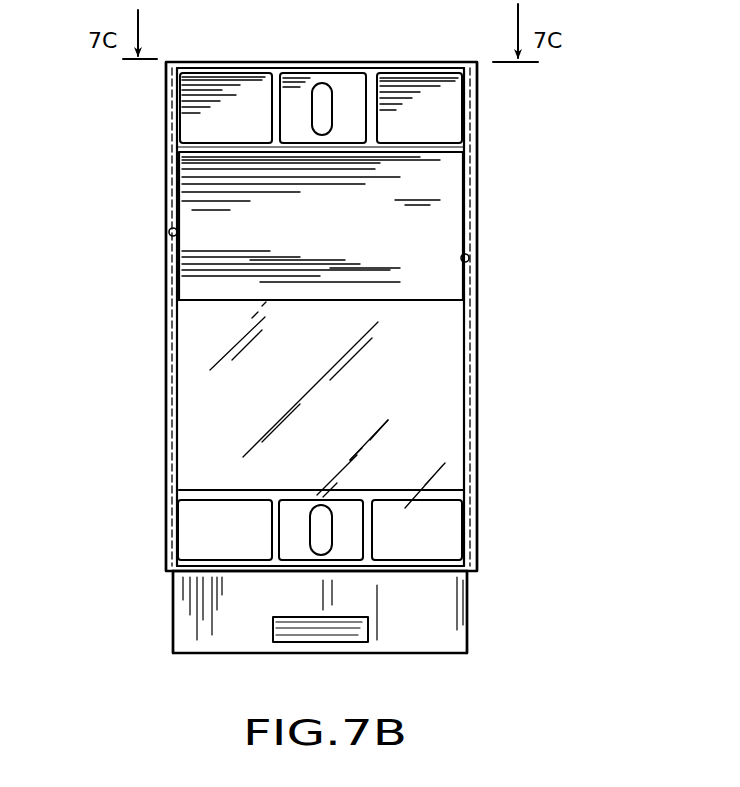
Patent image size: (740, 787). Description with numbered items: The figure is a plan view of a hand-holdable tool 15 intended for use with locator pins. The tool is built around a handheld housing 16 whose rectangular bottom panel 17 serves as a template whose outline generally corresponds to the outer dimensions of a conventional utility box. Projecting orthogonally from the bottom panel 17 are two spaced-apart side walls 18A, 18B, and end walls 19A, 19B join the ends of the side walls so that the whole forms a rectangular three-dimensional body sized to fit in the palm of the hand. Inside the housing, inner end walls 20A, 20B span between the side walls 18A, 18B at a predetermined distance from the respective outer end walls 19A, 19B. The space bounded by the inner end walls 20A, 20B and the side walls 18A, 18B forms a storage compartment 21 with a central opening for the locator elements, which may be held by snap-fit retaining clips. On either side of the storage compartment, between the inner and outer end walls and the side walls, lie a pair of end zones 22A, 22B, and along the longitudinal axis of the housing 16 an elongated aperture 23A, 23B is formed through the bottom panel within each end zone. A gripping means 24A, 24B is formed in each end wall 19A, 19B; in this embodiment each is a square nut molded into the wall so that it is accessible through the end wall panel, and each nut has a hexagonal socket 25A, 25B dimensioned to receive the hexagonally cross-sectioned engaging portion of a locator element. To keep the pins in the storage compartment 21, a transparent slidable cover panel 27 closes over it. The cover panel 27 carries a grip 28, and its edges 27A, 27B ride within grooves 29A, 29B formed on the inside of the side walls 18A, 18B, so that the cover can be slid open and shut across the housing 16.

The hand-holdable tool 15 is at (565, 258).
The handheld housing 16 is at (167, 327).
The bottom panel 17 is at (331, 241).
The side wall 18A is at (167, 385).
The side wall 18B is at (477, 336).
The end wall 19A is at (472, 572).
The end wall 19B is at (257, 65).
The inner end wall 20A is at (447, 493).
The inner end wall 20B is at (442, 147).
The storage compartment 21 is at (407, 250).
The end zone 22A is at (293, 520).
The end zone 22B is at (352, 110).
The elongated aperture 23A is at (316, 548).
The elongated aperture 23B is at (327, 123).
The gripping means 24A is at (347, 569).
The gripping means 24B is at (347, 65).
The hexagonal socket 25A is at (307, 573).
The hexagonal socket 25B is at (320, 66).
The slidable cover panel 27 is at (443, 640).
The cover panel edge 27A is at (172, 603).
The cover panel edge 27B is at (467, 633).
The grip 28 is at (273, 635).
The groove 29A is at (168, 232).
The groove 29B is at (470, 254).